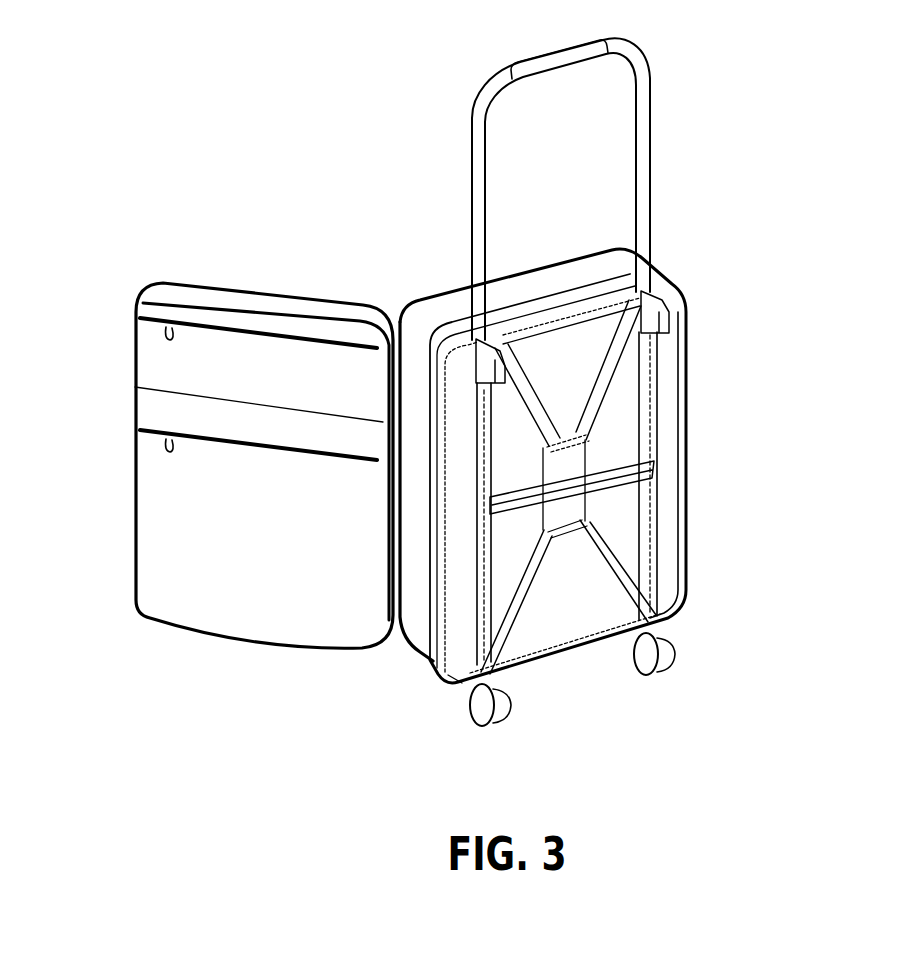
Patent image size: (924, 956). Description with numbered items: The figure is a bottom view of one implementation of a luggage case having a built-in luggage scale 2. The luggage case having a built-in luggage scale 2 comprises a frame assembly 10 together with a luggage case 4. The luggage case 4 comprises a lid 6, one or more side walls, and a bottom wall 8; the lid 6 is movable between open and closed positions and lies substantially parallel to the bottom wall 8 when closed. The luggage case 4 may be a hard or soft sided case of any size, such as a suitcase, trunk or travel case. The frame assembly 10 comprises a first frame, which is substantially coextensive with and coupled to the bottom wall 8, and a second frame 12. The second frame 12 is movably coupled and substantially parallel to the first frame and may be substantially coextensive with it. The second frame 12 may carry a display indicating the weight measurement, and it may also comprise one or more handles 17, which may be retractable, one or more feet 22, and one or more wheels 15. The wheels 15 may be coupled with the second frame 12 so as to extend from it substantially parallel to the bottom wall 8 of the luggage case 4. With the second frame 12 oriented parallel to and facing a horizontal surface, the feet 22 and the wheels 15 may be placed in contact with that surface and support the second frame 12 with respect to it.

The luggage case having a built-in luggage scale 2 is at (150, 136).
The luggage case 4 is at (397, 266).
The lid 6 is at (172, 563).
The bottom wall 8 is at (612, 428).
The frame assembly 10 is at (424, 686).
The second frame 12 is at (684, 285).
The wheels 15 is at (672, 648).
The handles 17 is at (638, 155).
The feet 22 is at (668, 305).